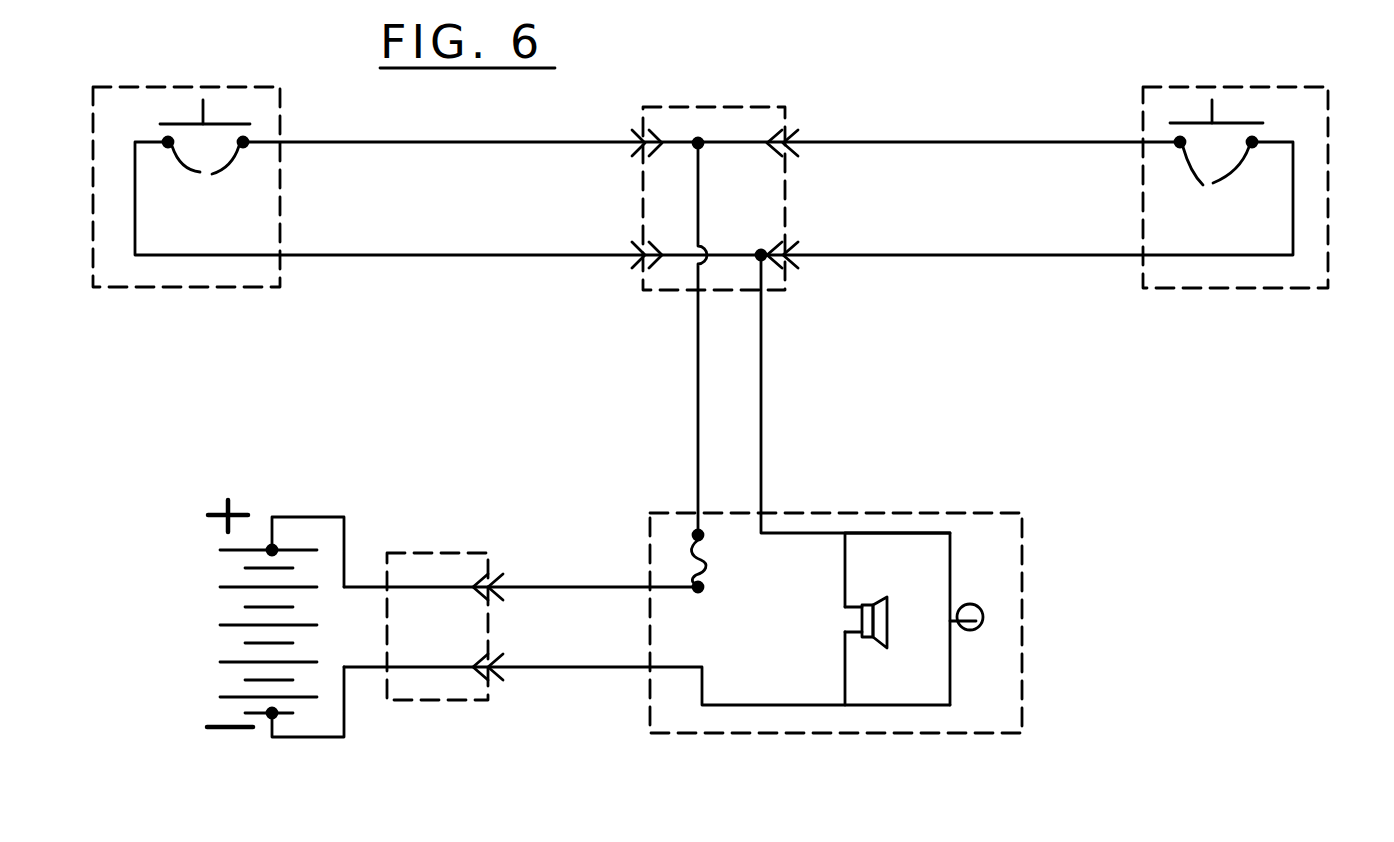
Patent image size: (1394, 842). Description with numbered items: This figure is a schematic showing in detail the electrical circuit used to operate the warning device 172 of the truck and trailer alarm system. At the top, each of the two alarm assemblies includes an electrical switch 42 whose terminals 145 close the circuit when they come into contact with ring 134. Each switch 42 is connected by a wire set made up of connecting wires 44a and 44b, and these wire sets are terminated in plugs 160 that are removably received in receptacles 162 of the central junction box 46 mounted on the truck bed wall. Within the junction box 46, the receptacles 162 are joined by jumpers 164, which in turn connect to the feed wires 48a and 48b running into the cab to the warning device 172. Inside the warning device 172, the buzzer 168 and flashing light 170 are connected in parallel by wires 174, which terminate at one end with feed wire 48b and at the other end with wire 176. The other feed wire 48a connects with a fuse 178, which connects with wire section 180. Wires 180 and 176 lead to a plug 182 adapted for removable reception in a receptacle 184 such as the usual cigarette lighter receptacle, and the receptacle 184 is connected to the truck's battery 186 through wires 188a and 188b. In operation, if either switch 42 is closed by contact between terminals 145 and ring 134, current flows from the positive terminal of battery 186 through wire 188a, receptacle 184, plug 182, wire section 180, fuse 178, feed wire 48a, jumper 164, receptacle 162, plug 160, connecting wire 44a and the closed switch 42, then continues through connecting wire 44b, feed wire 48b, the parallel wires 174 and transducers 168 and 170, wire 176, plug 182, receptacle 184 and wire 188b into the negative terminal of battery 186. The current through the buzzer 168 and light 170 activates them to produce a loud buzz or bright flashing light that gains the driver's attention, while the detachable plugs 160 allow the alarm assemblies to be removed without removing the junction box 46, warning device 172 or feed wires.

The electrical switch 42 is at (232, 86).
The ring 134 is at (232, 123).
The terminals 145 is at (710, 180).
The connecting wire 44a is at (474, 139).
The connecting wire 44b is at (449, 253).
The central junction box 46 is at (752, 113).
The plugs 160 is at (634, 153).
The receptacles 162 is at (657, 147).
The jumpers 164 is at (678, 138).
The feed wire 48a is at (698, 413).
The feed wire 48b is at (761, 405).
The flashing light 170 is at (987, 629).
The warning device 172 is at (1035, 550).
The wires 174 is at (950, 584).
The buzzer 168 is at (880, 652).
The fuse 178 is at (706, 563).
The wire section 180 is at (602, 586).
The wire 176 is at (611, 670).
The plug 182 is at (496, 591).
The receptacle 184 is at (437, 626).
The battery 186 is at (205, 690).
The wire 188a is at (344, 553).
The wire 188b is at (344, 695).